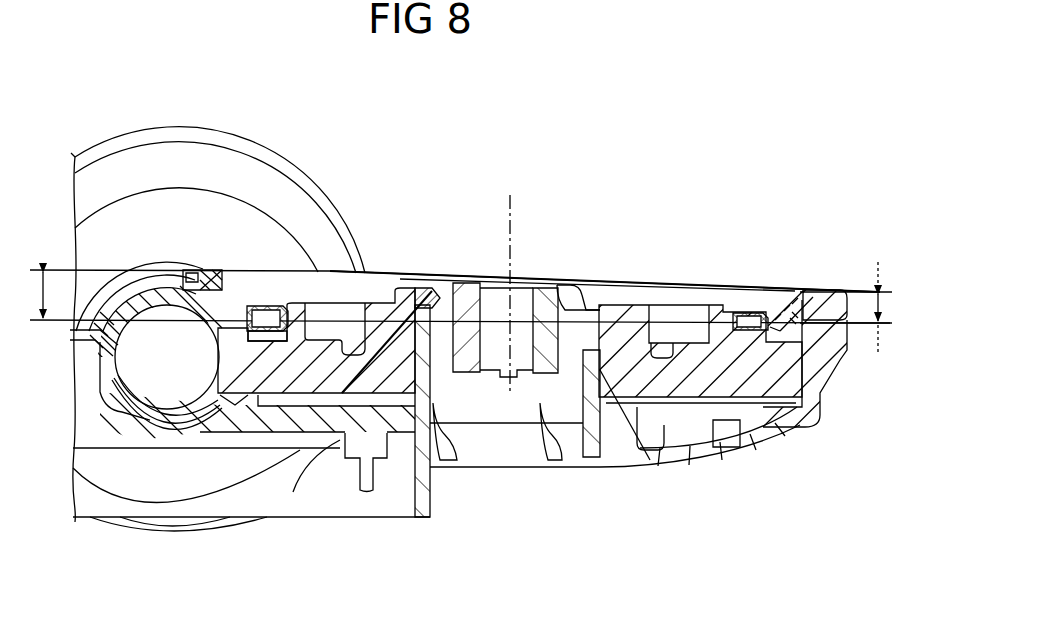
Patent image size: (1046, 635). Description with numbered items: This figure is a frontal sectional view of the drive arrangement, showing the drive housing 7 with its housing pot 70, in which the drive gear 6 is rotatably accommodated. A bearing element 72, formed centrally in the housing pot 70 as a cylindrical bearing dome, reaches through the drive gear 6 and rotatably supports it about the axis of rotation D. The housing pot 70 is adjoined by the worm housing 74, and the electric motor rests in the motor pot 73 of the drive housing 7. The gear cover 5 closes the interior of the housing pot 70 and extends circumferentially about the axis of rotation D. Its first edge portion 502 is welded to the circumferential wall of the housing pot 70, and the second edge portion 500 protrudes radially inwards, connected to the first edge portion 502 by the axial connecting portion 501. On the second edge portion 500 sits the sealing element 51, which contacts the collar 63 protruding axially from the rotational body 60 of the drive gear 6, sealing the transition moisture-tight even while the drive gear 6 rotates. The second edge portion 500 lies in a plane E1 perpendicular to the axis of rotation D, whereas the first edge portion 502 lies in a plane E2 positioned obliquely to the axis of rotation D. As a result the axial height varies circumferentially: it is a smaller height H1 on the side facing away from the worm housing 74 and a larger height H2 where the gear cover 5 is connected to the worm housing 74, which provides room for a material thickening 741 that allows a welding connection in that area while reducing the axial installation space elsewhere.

The gear cover 5 is at (785, 279).
The drive gear 6 is at (696, 406).
The drive housing 7 is at (356, 193).
The sealing element 51 is at (750, 322).
The rotational body 60 is at (733, 382).
The collar 63 is at (683, 318).
The housing pot 70 is at (826, 400).
The bearing element 72 is at (593, 392).
The motor pot 73 is at (296, 185).
The worm housing 74 is at (123, 412).
The second edge portion 500 is at (778, 336).
The axial connecting portion 501 is at (791, 323).
The first edge portion 502 is at (820, 292).
The material thickening 741 is at (205, 283).
The axis of rotation D is at (511, 230).
The plane E1 is at (886, 326).
The plane E2 is at (886, 291).
The height H1 is at (895, 307).
The height H2 is at (24, 295).